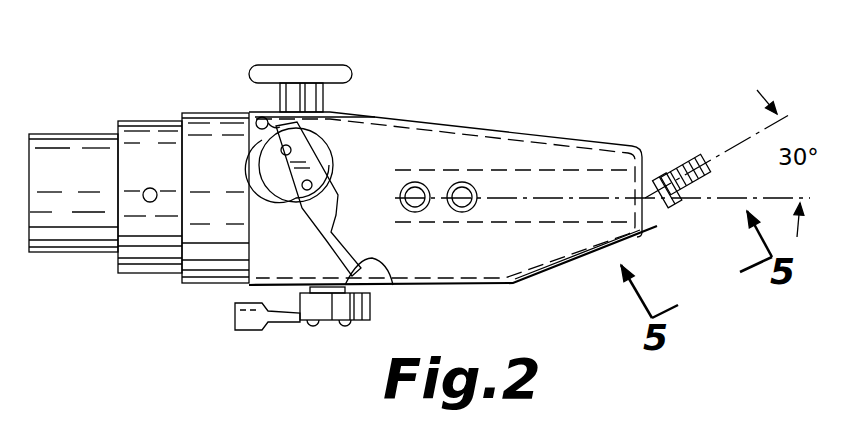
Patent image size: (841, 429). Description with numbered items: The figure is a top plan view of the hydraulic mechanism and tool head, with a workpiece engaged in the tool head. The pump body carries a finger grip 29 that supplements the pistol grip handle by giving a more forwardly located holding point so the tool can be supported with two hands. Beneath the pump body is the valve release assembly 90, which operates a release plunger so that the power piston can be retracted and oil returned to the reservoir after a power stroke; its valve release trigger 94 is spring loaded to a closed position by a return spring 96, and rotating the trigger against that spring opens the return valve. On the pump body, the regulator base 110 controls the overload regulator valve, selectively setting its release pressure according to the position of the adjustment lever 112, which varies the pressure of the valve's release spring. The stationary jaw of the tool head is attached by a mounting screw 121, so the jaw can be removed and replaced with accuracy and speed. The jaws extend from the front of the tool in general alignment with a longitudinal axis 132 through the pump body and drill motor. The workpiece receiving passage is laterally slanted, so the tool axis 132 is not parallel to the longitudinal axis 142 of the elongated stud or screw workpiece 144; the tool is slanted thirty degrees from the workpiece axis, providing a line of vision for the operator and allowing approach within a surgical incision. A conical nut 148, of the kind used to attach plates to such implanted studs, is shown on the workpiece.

The finger grip 29 is at (333, 72).
The regulator base 110 is at (332, 147).
The adjustment lever 112 is at (392, 284).
The mounting screw 121 is at (461, 190).
The longitudinal axis 132 is at (716, 201).
The longitudinal axis of workpiece 142 is at (760, 133).
The workpiece 144 is at (683, 172).
The conical nut 148 is at (662, 176).
The valve release assembly 90 is at (318, 325).
The valve release trigger 94 is at (250, 320).
The return spring 96 is at (335, 320).